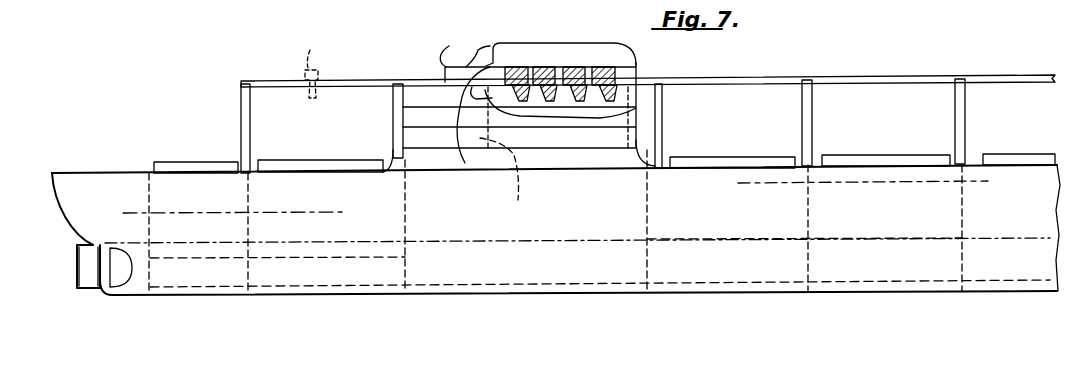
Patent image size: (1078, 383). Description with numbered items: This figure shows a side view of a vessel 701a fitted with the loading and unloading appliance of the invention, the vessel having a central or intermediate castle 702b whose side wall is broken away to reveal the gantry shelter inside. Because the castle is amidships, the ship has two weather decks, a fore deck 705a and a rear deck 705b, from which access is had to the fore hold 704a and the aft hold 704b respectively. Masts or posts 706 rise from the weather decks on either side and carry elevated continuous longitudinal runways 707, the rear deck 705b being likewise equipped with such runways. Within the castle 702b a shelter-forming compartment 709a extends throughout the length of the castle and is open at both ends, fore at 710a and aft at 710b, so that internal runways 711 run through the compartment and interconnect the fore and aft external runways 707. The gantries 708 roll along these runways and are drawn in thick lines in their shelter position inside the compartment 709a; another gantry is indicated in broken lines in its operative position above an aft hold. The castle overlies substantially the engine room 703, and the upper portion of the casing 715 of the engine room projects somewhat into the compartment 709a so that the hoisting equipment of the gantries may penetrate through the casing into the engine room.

The vessel 701a is at (140, 297).
The central castle 702b is at (524, 42).
The engine room 703 is at (492, 287).
The fore hold 704a is at (840, 275).
The aft hold 704b is at (273, 288).
The fore deck 705a is at (950, 156).
The rear deck 705b is at (108, 172).
The masts or posts 706 is at (250, 147).
The runways 707 is at (263, 81).
The gantries 708 is at (605, 88).
The shelter-forming compartment 709a is at (482, 127).
The fore opening 710a is at (638, 67).
The aft opening 710b is at (472, 61).
The internal runways 711 is at (413, 82).
The casing 715 is at (522, 185).